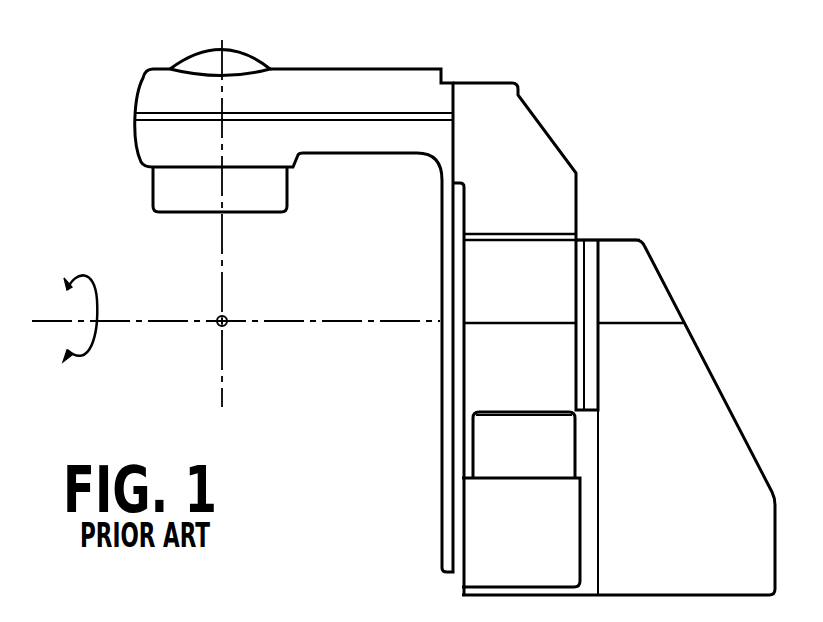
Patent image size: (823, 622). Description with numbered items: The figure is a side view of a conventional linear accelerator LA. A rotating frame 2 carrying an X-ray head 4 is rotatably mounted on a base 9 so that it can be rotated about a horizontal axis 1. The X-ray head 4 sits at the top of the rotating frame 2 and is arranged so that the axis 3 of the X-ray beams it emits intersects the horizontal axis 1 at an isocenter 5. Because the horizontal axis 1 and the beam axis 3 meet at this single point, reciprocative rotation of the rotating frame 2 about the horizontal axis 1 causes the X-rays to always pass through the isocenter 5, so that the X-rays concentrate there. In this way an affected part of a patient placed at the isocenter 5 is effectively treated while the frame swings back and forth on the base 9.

The linear accelerator LA is at (540, 90).
The horizontal axis 1 is at (143, 321).
The rotating frame 2 is at (557, 172).
The axis of X-ray beams 3 is at (223, 282).
The X-ray head 4 is at (145, 93).
The isocenter 5 is at (227, 327).
The base 9 is at (722, 453).